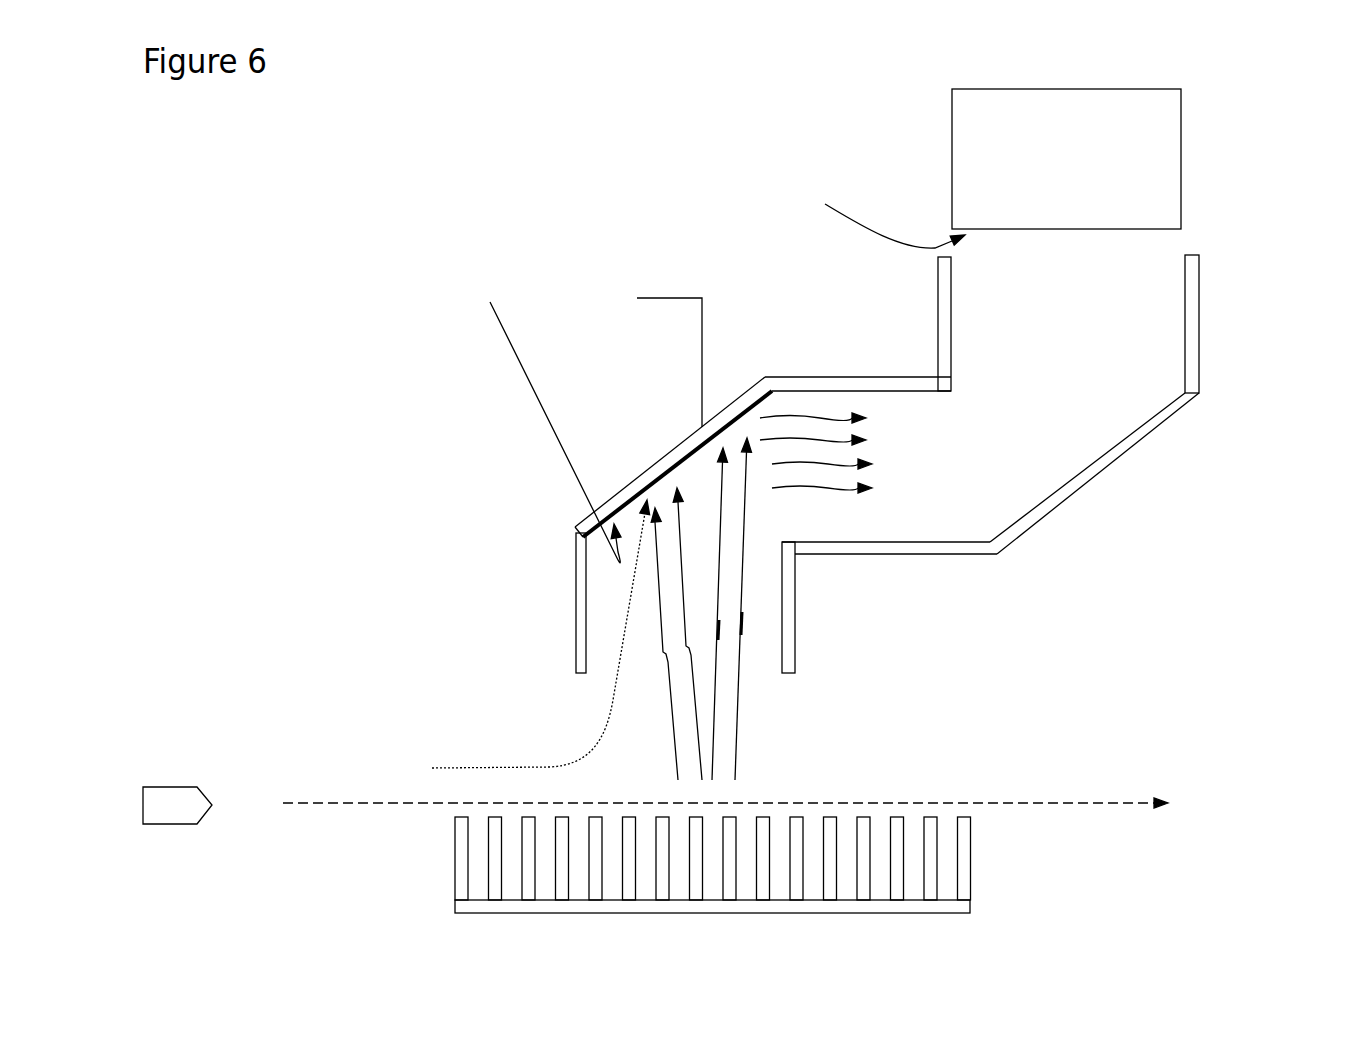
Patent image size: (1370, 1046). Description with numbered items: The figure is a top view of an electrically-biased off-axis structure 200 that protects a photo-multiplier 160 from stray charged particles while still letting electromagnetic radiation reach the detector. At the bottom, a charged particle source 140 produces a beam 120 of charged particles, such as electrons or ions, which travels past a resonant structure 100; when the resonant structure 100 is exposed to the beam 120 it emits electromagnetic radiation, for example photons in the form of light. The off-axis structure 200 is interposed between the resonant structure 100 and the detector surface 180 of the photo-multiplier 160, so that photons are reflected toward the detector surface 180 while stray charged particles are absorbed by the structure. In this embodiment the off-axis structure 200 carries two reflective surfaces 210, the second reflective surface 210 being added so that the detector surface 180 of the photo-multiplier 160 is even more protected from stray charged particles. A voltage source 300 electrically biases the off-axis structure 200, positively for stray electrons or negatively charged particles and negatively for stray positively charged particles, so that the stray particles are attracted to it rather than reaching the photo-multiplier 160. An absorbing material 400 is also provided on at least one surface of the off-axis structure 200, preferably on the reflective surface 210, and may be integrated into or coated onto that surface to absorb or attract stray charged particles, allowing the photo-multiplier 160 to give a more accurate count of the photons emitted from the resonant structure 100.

The resonant structure 100 is at (970, 912).
The beam 120 is at (1058, 804).
The charged particle source 140 is at (172, 824).
The photo-multiplier 160 is at (1181, 160).
The detector surface 180 is at (877, 209).
The off-axis structure 200 is at (468, 332).
The reflective surface 210 is at (675, 448).
The voltage source 300 is at (580, 275).
The absorbing material 400 is at (540, 416).